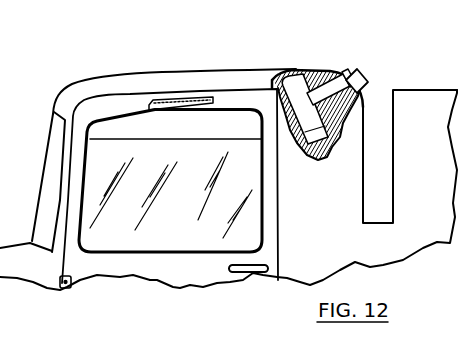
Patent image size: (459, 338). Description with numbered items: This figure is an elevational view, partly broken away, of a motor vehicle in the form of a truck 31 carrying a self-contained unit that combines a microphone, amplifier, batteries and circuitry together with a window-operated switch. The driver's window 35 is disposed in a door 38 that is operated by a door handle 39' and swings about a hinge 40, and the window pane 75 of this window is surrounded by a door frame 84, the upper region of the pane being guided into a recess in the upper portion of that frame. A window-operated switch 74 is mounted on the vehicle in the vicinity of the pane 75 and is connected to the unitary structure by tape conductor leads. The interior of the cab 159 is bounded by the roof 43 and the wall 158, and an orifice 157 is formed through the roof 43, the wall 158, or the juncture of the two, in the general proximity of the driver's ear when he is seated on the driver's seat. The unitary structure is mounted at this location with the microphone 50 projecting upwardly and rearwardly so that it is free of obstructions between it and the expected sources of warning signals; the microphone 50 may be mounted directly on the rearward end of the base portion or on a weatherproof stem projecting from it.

The truck 31 is at (89, 95).
The cab 159 is at (135, 87).
The roof 43 is at (187, 77).
The window-operated switch 74 is at (183, 106).
The orifice 157 is at (345, 77).
The microphone 50 is at (364, 74).
The wall 158 is at (364, 128).
The hinge 40 is at (67, 291).
The door frame 84 is at (107, 265).
The window 35 is at (162, 232).
The door 38 is at (186, 276).
The window pane 75 is at (222, 237).
The door handle 39' is at (249, 286).